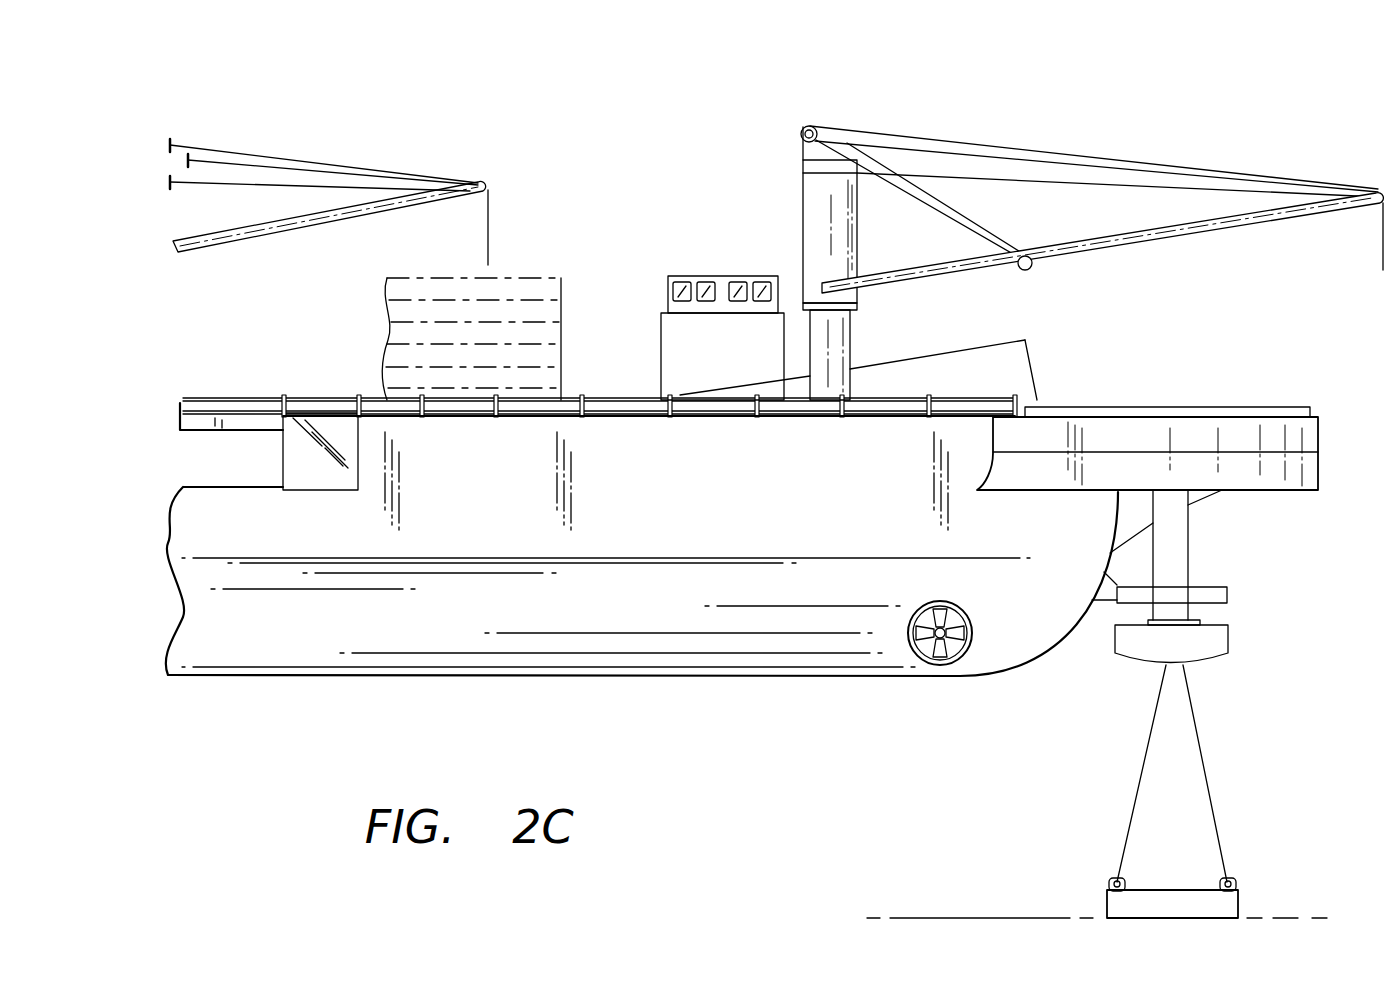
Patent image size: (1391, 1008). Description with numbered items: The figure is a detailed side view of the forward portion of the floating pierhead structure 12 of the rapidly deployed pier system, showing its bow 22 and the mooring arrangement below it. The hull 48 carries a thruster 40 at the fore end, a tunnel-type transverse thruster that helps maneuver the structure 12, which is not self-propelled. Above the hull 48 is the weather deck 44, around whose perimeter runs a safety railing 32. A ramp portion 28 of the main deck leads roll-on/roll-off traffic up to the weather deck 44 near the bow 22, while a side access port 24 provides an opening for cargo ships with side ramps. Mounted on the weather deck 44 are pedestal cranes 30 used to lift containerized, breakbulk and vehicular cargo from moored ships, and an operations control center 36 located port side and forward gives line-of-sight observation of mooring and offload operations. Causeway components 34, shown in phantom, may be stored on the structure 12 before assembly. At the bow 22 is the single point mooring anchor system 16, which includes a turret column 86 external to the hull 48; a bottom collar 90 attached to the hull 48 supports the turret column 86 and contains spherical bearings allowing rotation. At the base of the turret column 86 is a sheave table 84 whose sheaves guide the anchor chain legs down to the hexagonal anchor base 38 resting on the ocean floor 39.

The floating pierhead structure 12 is at (636, 146).
The single point mooring anchor system 16 is at (1086, 666).
The bow 22 is at (1253, 407).
The side access port 24 is at (208, 458).
The ramp portion 28 is at (968, 358).
The pedestal crane 30 is at (273, 233).
The safety railing 32 is at (332, 398).
The components of causeway 34 is at (551, 268).
The operations control center 36 is at (719, 282).
The anchor base 38 is at (1185, 890).
The ocean floor 39 is at (993, 917).
The thruster 40 is at (953, 655).
The weather deck 44 is at (612, 410).
The hull 48 is at (288, 653).
The sheave table 84 is at (1230, 641).
The turret column 86 is at (1190, 537).
The bottom collar 90 is at (1228, 595).